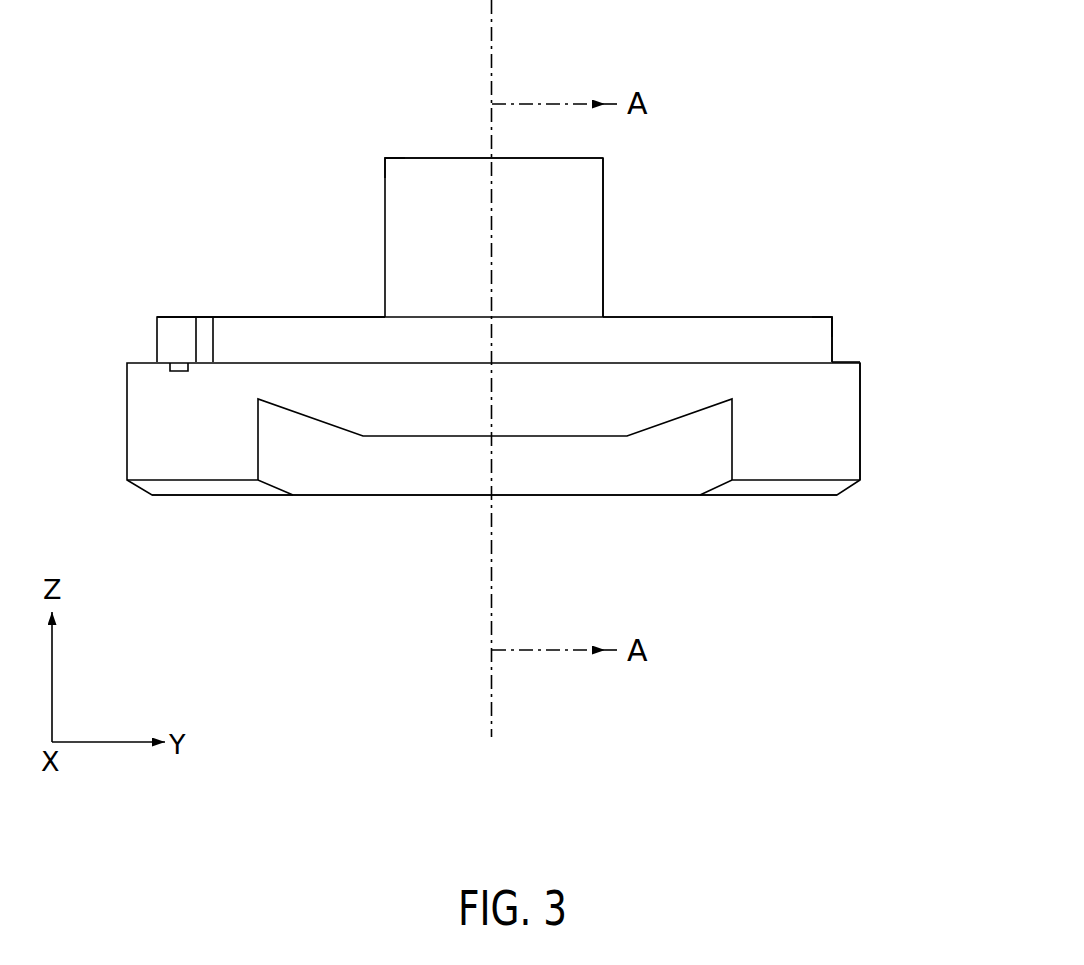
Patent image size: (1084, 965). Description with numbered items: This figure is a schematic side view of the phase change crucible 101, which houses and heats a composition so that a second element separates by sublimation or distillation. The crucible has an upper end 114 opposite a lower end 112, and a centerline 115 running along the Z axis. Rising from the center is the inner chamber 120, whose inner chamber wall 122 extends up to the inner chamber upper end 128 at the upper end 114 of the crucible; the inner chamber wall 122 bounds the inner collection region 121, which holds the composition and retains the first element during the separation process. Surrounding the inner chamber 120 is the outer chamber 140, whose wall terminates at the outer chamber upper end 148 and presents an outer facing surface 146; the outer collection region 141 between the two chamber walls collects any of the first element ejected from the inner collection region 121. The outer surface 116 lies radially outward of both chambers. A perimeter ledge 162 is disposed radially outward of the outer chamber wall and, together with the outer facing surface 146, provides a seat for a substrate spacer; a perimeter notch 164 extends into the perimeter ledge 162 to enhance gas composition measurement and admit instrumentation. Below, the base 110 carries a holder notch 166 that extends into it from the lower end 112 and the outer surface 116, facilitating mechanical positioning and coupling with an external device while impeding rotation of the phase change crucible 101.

The phase change crucible 101 is at (784, 89).
The base 110 is at (833, 442).
The lower end 112 is at (402, 531).
The upper end 114 is at (226, 204).
The centerline 115 is at (495, 45).
The outer surface 116 is at (862, 413).
The inner chamber 120 is at (385, 238).
The inner collection region 121 is at (449, 147).
The inner chamber wall 122 is at (614, 243).
The inner chamber upper end 128 is at (400, 158).
The outer chamber 140 is at (782, 291).
The outer collection region 141 is at (735, 291).
The outer facing surface 146 is at (834, 332).
The outer chamber upper end 148 is at (808, 317).
The perimeter ledge 162 is at (853, 350).
The perimeter notch 164 is at (180, 362).
The holder notch 166 is at (678, 465).